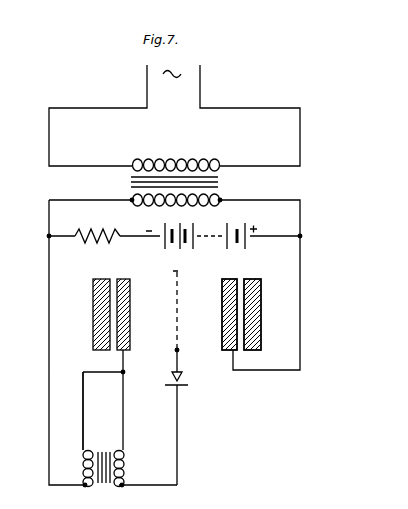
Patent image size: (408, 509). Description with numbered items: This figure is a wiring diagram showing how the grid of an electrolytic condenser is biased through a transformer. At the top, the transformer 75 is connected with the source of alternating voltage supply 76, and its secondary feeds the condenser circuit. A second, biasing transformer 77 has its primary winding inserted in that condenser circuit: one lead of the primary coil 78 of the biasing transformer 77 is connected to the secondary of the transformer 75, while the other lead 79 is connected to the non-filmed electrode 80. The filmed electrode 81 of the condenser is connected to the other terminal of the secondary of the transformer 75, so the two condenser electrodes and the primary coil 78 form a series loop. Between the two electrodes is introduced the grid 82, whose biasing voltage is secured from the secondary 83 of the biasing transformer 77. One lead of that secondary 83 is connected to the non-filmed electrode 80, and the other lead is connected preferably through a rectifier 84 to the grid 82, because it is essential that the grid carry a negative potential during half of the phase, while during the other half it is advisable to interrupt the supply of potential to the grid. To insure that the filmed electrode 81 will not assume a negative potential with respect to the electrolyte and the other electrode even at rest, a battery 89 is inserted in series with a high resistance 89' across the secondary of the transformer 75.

The transformer 75 is at (232, 190).
The source of alternating voltage supply 76 is at (176, 95).
The biasing transformer 77 is at (100, 485).
The primary coil 78 is at (83, 464).
The lead 79 is at (83, 398).
The non-filmed electrode 80 is at (93, 303).
The filmed electrode 81 is at (261, 313).
The grid 82 is at (178, 326).
The secondary 83 is at (128, 466).
The rectifier 84 is at (190, 385).
The battery 89 is at (201, 246).
The high resistance 89' is at (97, 245).